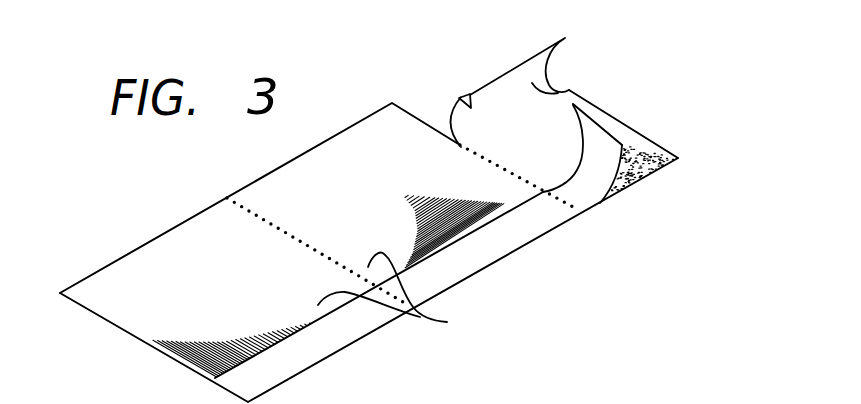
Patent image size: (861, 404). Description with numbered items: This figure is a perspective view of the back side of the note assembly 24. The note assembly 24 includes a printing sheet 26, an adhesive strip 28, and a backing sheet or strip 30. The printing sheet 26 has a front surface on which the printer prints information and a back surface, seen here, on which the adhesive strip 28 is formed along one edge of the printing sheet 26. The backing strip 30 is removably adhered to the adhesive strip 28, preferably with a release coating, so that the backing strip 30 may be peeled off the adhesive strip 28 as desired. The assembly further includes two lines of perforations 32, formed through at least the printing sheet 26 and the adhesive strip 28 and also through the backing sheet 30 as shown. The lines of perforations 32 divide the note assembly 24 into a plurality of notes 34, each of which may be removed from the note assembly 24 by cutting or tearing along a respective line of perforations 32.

The note assembly 24 is at (724, 163).
The printing sheet 26 is at (158, 263).
The adhesive strip 28 is at (653, 142).
The backing strip 30 is at (597, 178).
The line of perforations 32 is at (273, 227).
The note 34 is at (560, 90).